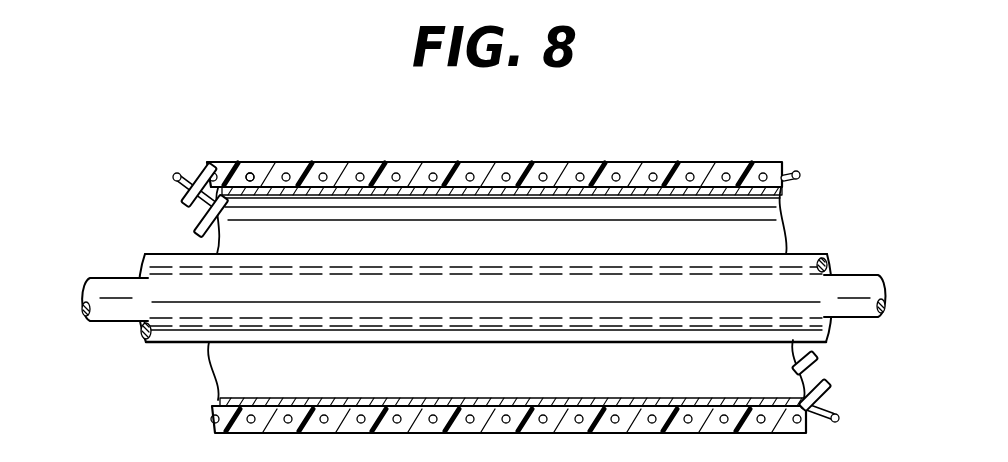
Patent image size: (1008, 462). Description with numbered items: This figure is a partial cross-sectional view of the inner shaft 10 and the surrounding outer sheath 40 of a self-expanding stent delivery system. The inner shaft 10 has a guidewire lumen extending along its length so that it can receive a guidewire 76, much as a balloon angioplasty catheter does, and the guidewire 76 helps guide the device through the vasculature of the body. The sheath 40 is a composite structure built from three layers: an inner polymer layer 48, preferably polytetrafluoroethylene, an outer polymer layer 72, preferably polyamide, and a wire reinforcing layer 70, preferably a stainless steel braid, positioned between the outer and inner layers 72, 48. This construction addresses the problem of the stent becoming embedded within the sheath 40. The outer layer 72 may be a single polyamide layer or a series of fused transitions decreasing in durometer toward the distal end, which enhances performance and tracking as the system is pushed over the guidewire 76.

The inner shaft 10 is at (818, 250).
The sheath 40 is at (547, 158).
The inner polymer layer 48 is at (716, 188).
The wire reinforcing layer 70 is at (250, 171).
The outer polymer layer 72 is at (763, 168).
The guidewire 76 is at (98, 322).